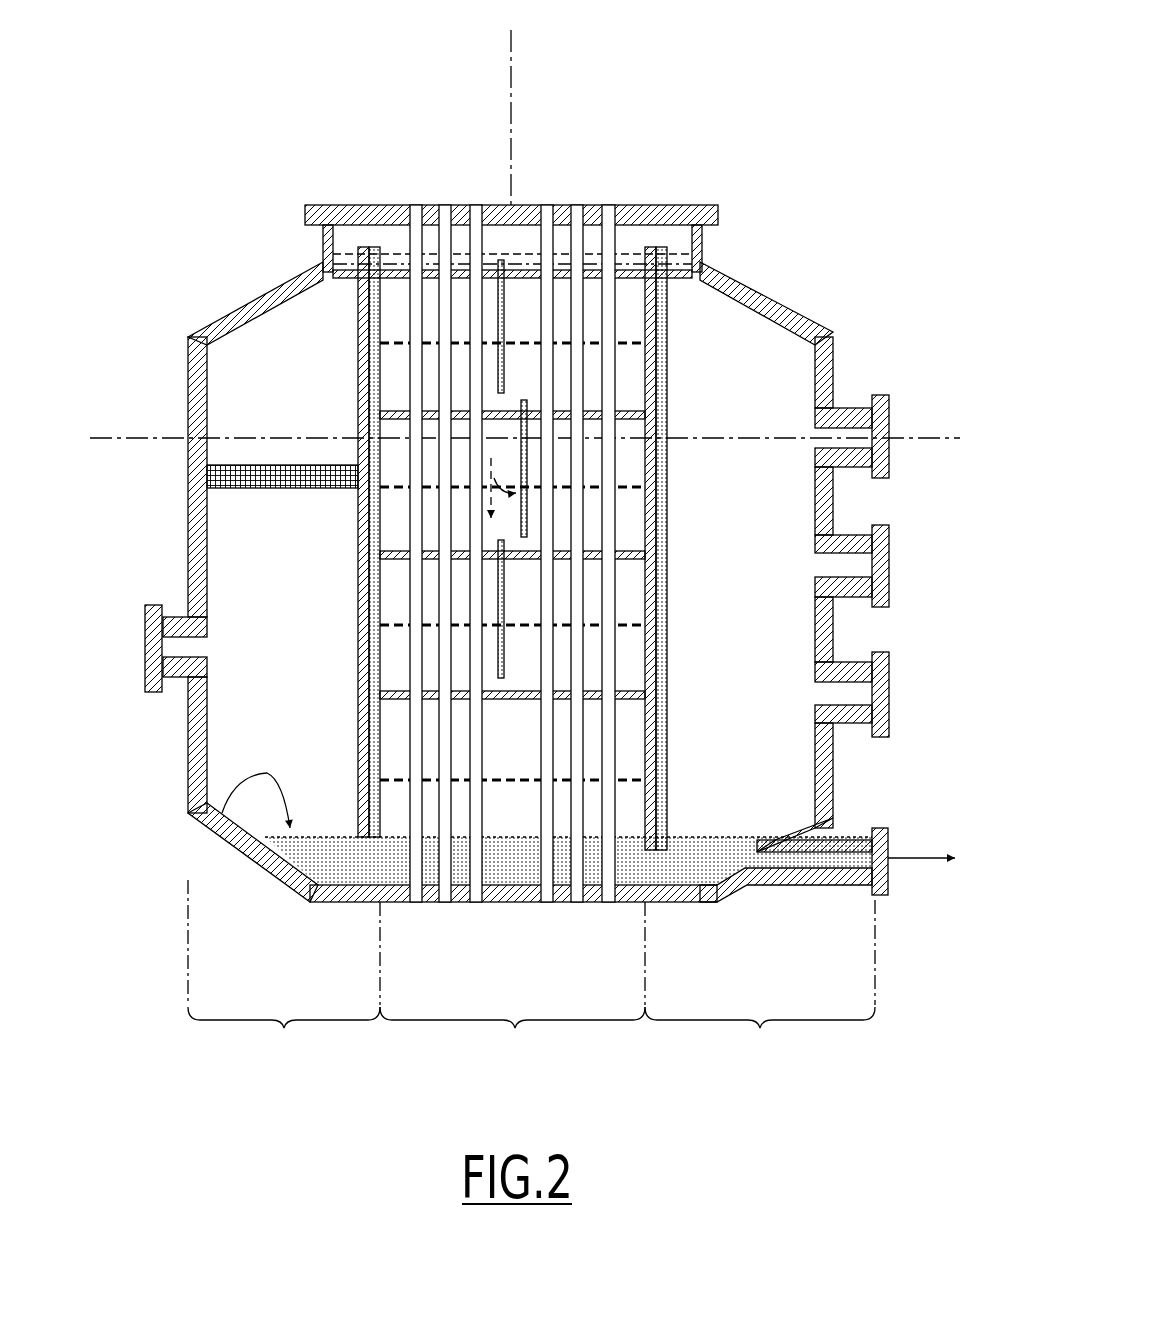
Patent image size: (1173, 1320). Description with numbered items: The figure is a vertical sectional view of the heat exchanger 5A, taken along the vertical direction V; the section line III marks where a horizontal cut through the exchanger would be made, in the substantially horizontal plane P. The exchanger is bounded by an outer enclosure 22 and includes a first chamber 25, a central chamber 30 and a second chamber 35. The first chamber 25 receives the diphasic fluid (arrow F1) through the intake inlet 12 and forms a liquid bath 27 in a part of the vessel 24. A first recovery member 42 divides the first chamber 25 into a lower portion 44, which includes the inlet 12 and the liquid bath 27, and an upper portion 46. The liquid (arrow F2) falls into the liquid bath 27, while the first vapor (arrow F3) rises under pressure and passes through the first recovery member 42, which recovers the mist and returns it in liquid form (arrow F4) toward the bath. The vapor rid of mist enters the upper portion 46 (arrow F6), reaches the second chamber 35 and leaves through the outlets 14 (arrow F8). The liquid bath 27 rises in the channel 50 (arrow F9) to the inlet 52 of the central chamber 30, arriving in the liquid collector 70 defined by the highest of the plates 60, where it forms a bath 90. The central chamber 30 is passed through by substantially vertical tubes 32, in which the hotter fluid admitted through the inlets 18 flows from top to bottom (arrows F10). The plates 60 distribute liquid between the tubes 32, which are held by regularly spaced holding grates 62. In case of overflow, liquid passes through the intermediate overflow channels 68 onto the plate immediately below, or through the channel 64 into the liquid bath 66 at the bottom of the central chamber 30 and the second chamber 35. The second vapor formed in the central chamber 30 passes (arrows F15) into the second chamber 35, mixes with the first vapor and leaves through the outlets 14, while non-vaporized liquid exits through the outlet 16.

The heat exchanger 5A is at (200, 172).
The intake inlet 12 is at (182, 652).
The outlets for a vapor 14 is at (846, 408).
The outlet for non-vaporized liquid 16 is at (818, 885).
The inlets 18 is at (415, 170).
The outer enclosure 22 is at (762, 300).
The vessel 24 is at (196, 822).
The first chamber 25 is at (284, 974).
The liquid bath 27 is at (300, 896).
The central chamber 30 is at (512, 985).
The tubes 32 is at (476, 205).
The second chamber 35 is at (760, 984).
The first recovery member 42 is at (240, 477).
The lower portion 44 is at (237, 818).
The upper portion 46 is at (247, 418).
The channel 50 is at (358, 765).
The inlet of the central chamber 52 is at (368, 300).
The plates 60 is at (628, 282).
The holding grates 62 is at (598, 484).
The channel 64 is at (666, 522).
The liquid bath 66 is at (678, 870).
The intermediate overflow channels 68 is at (505, 318).
The liquid collector 70 is at (522, 242).
The bath 90 is at (592, 205).
The arrow F1 is at (138, 647).
The arrow F2 is at (226, 652).
The arrow F3 is at (262, 555).
The arrow F4 is at (317, 725).
The arrow F6 is at (267, 460).
The arrow F8 is at (890, 693).
The arrow F9 is at (363, 440).
The arrows F10 is at (656, 243).
The arrows F15 is at (667, 378).
The horizontal plane P is at (175, 438).
The vertical direction V is at (511, 80).
The section line III is at (121, 368).